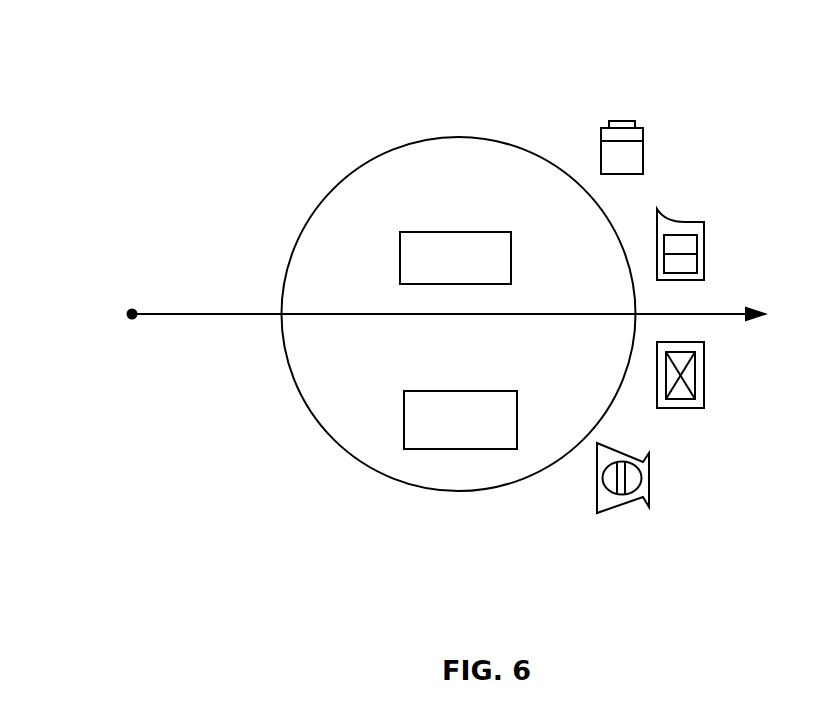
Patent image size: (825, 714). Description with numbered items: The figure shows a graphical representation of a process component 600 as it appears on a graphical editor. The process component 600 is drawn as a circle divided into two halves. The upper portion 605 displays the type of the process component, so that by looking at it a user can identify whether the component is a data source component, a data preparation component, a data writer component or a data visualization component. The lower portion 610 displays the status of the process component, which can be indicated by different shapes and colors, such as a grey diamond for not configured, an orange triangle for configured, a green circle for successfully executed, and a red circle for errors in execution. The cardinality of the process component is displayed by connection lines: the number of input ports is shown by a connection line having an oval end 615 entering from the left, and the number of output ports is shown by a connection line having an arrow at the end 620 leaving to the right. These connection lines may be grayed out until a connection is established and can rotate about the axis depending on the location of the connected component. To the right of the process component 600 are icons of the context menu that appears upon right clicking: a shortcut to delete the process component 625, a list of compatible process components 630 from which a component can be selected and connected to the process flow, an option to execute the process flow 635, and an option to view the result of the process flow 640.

The process component 600 is at (160, 76).
The upper portion 605 is at (470, 232).
The lower portion 610 is at (473, 391).
The connection line having oval end 615 is at (172, 314).
The connection line having an arrow at the end 620 is at (724, 313).
The shortcut to delete the process component 625 is at (622, 121).
The list of compatible process components 630 is at (688, 222).
The option to execute the process flow 635 is at (704, 370).
The option to view the result of the process flow 640 is at (650, 477).